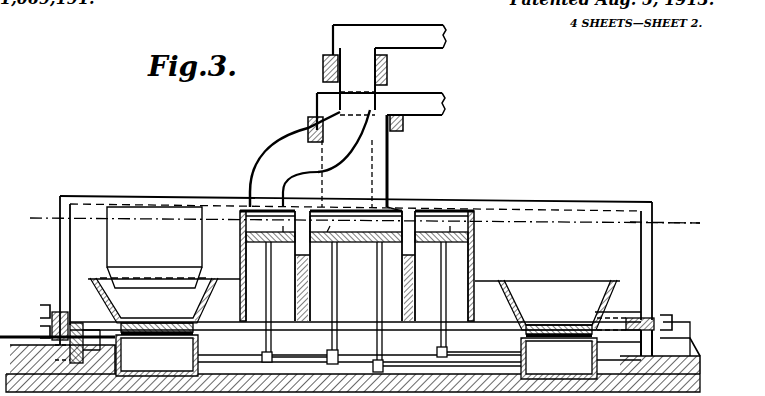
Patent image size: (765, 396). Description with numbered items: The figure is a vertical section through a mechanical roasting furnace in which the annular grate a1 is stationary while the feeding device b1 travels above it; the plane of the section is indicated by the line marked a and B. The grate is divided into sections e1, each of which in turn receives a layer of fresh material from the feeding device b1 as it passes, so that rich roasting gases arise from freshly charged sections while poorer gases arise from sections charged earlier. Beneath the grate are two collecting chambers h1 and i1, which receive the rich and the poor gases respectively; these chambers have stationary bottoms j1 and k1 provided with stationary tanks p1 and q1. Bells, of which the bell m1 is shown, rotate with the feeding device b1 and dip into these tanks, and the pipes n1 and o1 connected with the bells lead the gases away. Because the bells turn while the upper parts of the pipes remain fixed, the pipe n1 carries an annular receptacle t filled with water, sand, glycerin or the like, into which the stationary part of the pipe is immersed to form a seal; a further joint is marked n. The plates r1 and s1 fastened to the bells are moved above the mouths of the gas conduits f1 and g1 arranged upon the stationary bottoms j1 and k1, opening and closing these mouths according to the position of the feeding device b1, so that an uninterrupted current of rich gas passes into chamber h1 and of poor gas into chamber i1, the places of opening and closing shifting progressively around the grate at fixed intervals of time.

The section line a is at (358, 217).
The section line end B is at (676, 223).
The feeding device b1 is at (240, 216).
The pipe n1 is at (422, 38).
The pipe flange n is at (387, 70).
The pipe o1 is at (428, 108).
The annular receptacle t is at (403, 127).
The bell m1 is at (403, 210).
The collecting chamber h1 is at (357, 266).
The plate r1 is at (369, 224).
The plate s1 is at (337, 224).
The collecting chamber i1 is at (356, 224).
The stationary bottom j1 is at (441, 252).
The stationary bottom k1 is at (345, 252).
The stationary tank q1 is at (310, 292).
The stationary tank p1 is at (246, 298).
The gas conduit f1 is at (272, 353).
The gas conduit g1 is at (338, 352).
The annular grate a1 is at (354, 304).
The grate section e1 is at (356, 351).